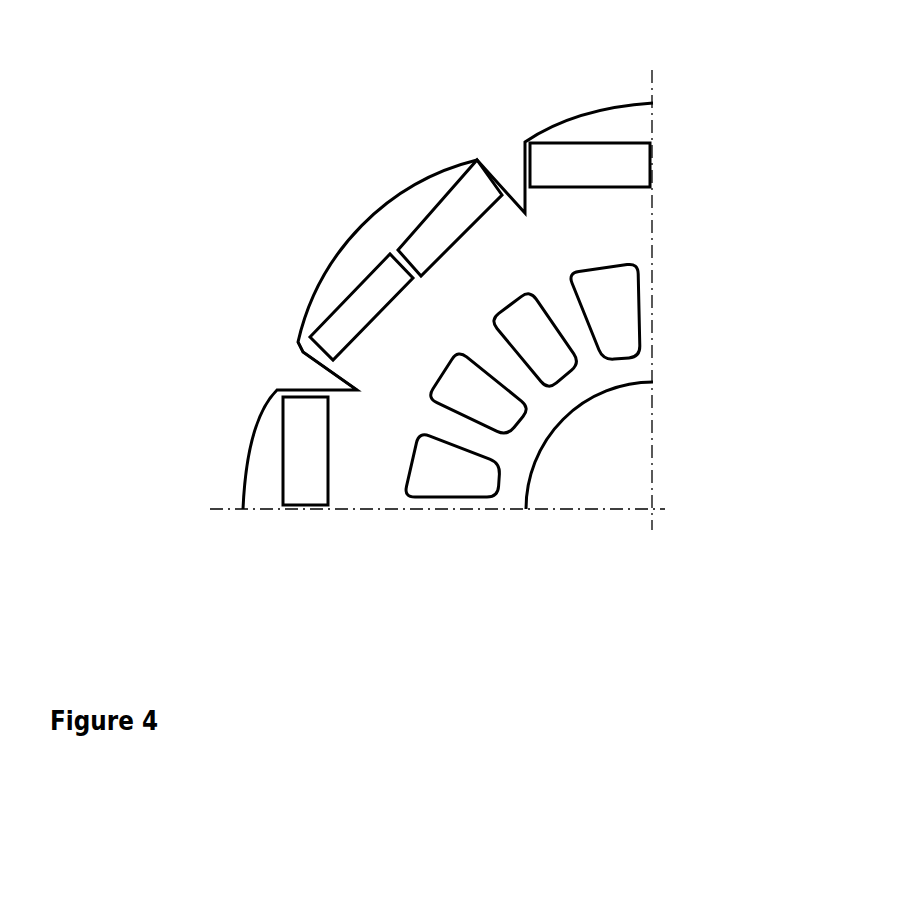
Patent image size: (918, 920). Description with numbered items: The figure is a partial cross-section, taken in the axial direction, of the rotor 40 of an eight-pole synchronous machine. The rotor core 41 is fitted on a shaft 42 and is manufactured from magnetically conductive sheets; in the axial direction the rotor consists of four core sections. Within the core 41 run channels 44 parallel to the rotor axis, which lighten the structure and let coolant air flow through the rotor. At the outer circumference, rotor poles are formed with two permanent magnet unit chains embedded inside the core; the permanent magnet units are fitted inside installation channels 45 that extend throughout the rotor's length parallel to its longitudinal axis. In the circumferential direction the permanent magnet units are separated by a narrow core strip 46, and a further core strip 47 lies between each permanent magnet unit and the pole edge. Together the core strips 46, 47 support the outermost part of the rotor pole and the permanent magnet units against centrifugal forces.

The rotor 40 is at (352, 130).
The rotor core 41 is at (430, 323).
The shaft 42 is at (613, 435).
The channels 44 is at (616, 345).
The installation channels 45 is at (590, 170).
The core strip 46 is at (382, 255).
The core strip 47 is at (302, 357).